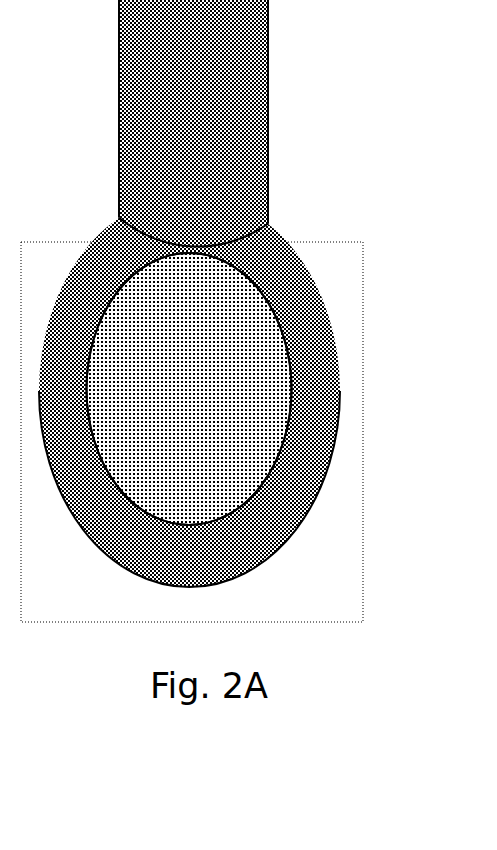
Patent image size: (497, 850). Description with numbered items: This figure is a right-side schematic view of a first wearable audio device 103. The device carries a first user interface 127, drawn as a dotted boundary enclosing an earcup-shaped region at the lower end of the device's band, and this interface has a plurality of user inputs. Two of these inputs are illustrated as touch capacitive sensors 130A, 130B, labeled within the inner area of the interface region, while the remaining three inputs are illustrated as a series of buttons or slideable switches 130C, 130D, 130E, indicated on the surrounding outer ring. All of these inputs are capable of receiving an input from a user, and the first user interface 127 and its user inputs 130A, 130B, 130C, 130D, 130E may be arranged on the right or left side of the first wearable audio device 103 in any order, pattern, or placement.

The first wearable audio device 103 is at (268, 160).
The first user interface 127 is at (308, 242).
The touch capacitive sensor 130A is at (215, 380).
The touch capacitive sensor 130B is at (215, 438).
The button or slideable switch 130C is at (317, 458).
The button or slideable switch 130D is at (302, 507).
The button or slideable switch 130E is at (270, 538).